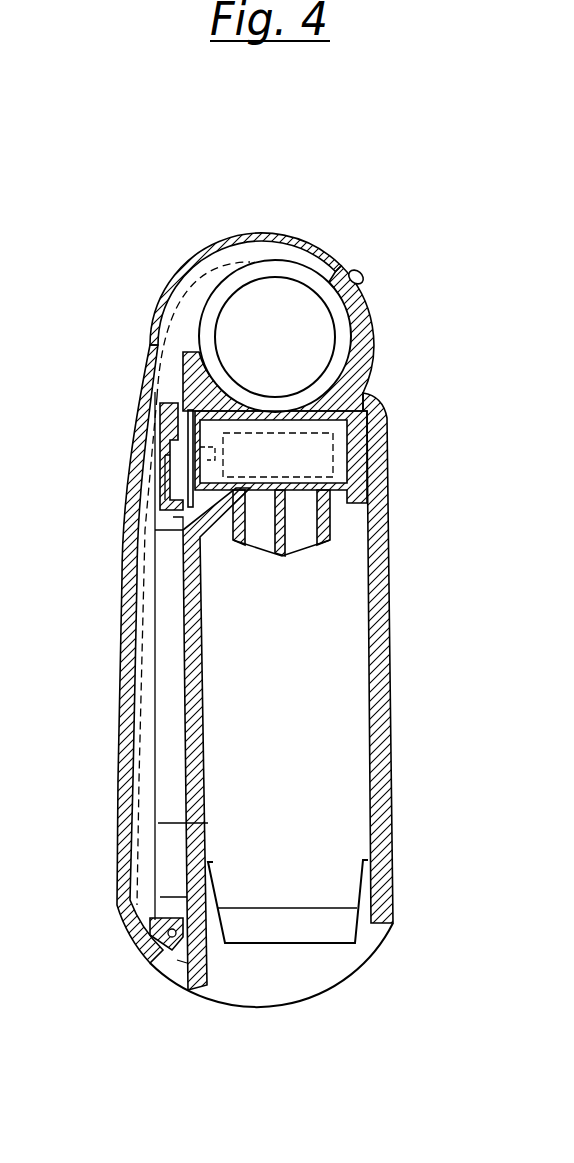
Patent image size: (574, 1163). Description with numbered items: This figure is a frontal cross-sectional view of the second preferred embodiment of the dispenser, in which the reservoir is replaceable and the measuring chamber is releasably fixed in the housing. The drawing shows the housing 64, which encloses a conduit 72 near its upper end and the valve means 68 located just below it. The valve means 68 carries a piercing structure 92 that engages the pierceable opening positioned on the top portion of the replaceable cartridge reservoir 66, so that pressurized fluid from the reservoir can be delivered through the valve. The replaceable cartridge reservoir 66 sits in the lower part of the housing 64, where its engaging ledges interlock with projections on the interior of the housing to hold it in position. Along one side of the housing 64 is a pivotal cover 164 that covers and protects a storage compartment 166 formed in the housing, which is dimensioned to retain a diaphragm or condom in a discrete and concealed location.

The housing 64 is at (382, 722).
The conduit 72 is at (297, 302).
The pivotal cover 164 is at (127, 722).
The valve means 68 is at (157, 440).
The piercing structure 92 is at (313, 552).
The replaceable cartridge reservoir 66 is at (308, 933).
The storage compartment 166 is at (172, 884).